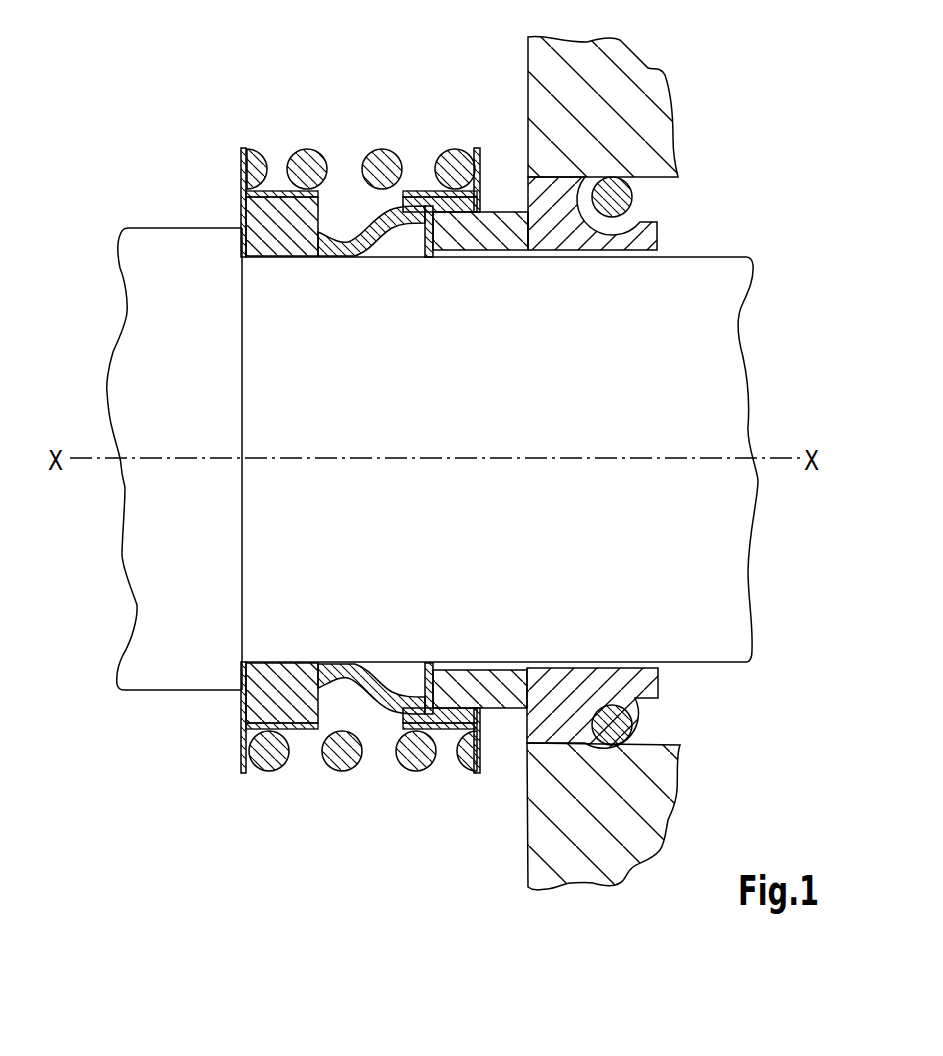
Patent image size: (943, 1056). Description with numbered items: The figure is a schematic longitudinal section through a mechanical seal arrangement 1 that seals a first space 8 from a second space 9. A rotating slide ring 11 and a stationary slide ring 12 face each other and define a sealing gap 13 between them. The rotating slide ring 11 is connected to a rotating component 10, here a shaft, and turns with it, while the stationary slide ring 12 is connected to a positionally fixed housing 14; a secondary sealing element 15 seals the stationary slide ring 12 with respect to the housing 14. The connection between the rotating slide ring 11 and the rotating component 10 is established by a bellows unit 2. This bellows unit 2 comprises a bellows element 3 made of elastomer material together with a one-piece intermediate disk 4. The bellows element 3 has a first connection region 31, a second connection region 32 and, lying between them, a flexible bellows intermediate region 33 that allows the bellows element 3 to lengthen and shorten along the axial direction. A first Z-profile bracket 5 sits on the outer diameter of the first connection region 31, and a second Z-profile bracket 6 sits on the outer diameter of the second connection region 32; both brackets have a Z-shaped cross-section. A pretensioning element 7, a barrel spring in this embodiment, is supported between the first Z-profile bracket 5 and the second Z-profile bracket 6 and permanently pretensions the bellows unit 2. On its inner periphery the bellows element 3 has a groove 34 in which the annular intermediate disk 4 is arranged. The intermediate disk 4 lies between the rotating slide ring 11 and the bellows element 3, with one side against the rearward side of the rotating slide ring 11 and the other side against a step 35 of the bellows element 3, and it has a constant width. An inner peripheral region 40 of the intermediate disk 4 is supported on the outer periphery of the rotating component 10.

The mechanical seal arrangement 1 is at (451, 445).
The bellows unit 2 is at (349, 757).
The bellows element 3 is at (383, 722).
The intermediate disk 4 is at (447, 722).
The first Z-profile bracket 5 is at (236, 752).
The second Z-profile bracket 6 is at (487, 757).
The pretensioning element 7 is at (302, 148).
The first space 8 is at (384, 188).
The second space 9 is at (634, 238).
The rotating component 10 is at (732, 363).
The rotating slide ring 11 is at (500, 212).
The stationary slide ring 12 is at (657, 230).
The sealing gap 13 is at (543, 238).
The housing 14 is at (657, 100).
The secondary sealing element 15 is at (633, 192).
The first connection region 31 is at (273, 191).
The second connection region 32 is at (458, 160).
The bellows intermediate region 33 is at (357, 231).
The groove 34 is at (420, 197).
The step 35 is at (437, 690).
The inner peripheral region 40 is at (428, 257).